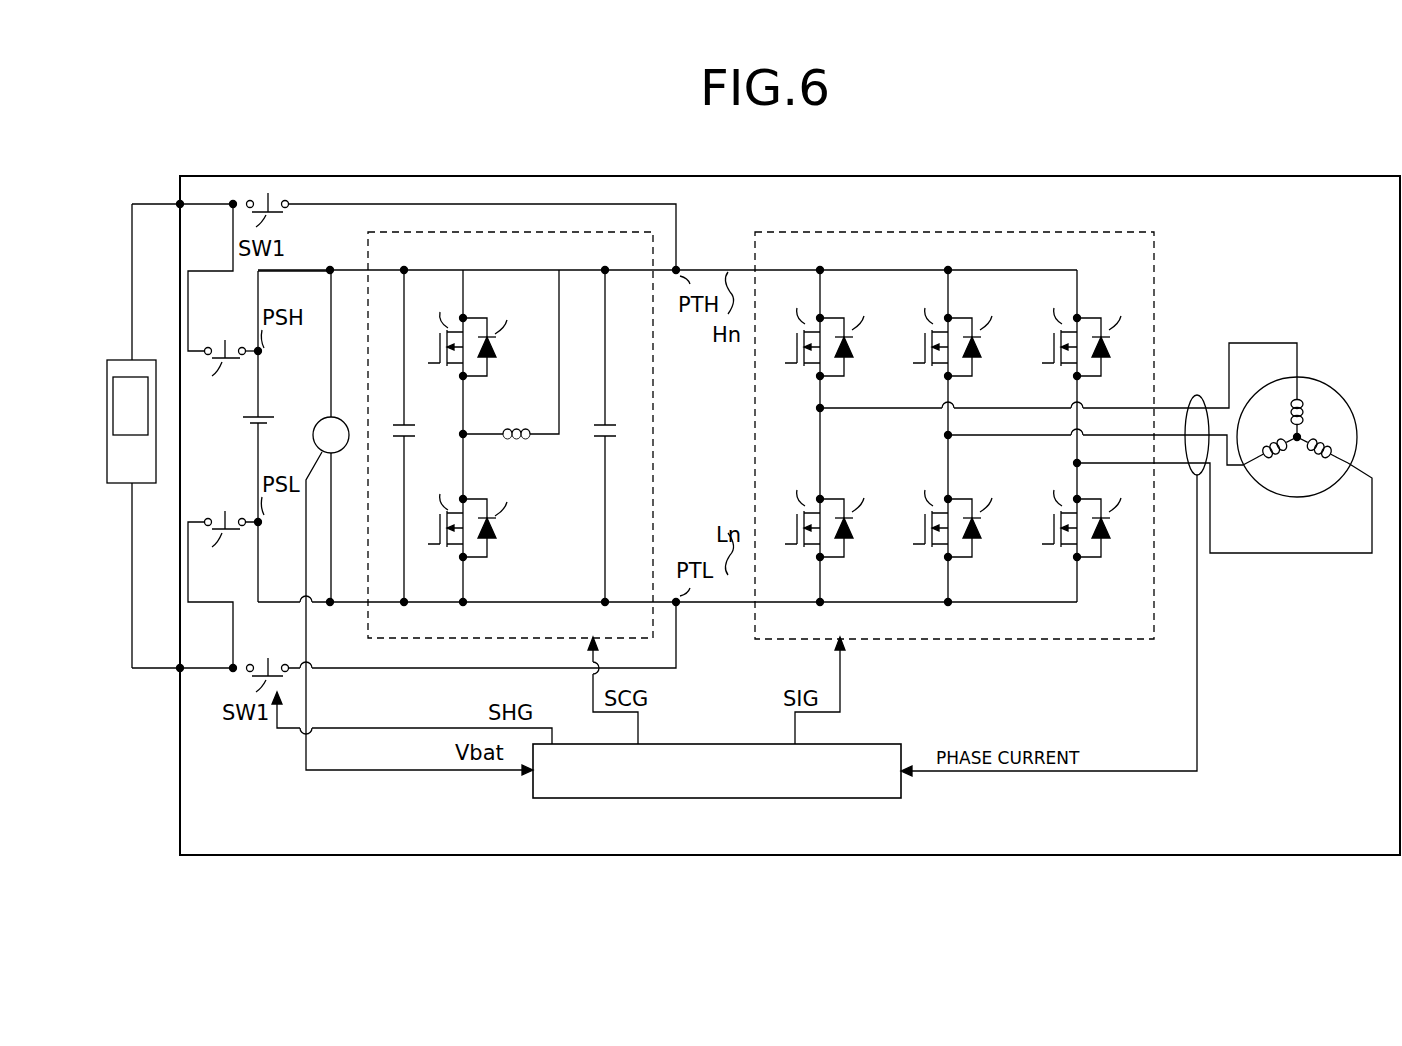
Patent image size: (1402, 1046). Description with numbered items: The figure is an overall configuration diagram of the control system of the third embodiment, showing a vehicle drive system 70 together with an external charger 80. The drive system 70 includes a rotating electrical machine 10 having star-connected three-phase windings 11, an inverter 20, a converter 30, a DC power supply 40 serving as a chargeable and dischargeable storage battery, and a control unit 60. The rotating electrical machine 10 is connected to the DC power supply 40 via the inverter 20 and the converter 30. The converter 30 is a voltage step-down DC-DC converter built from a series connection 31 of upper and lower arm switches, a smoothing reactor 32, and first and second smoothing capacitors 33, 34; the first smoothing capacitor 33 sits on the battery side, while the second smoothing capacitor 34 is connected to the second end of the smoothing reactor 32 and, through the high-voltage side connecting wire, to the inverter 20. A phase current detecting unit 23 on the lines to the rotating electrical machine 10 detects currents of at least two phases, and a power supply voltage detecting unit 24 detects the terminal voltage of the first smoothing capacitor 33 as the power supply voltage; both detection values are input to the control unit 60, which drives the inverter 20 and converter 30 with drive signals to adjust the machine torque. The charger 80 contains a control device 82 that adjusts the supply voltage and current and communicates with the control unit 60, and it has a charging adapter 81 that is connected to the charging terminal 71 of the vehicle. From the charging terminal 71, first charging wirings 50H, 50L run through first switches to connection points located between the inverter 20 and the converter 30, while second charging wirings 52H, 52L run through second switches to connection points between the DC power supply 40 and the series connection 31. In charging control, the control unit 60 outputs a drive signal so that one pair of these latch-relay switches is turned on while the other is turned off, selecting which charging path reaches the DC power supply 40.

The drive system 70 is at (390, 176).
The charger 80 is at (120, 360).
The control device 82 is at (113, 397).
The charging adapter 81 is at (138, 203).
The charging terminal 71 is at (177, 208).
The second high-voltage side charging wiring 52H is at (233, 238).
The second low-voltage side charging wiring 52L is at (233, 636).
The DC power supply 40 is at (264, 408).
The power supply voltage detecting unit 24 is at (320, 422).
The converter 30 is at (368, 242).
The series connection 31 is at (478, 292).
The smoothing reactor 32 is at (521, 430).
The first smoothing capacitor 33 is at (396, 418).
The second smoothing capacitor 34 is at (598, 418).
The high-voltage side charging wiring 50H is at (680, 232).
The low-voltage side charging wiring 50L is at (680, 636).
The inverter 20 is at (1155, 254).
The phase current detecting unit 23 is at (1200, 394).
The rotating electrical machine 10 is at (1353, 396).
The three-phase windings 11 is at (1278, 394).
The control unit 60 is at (884, 746).